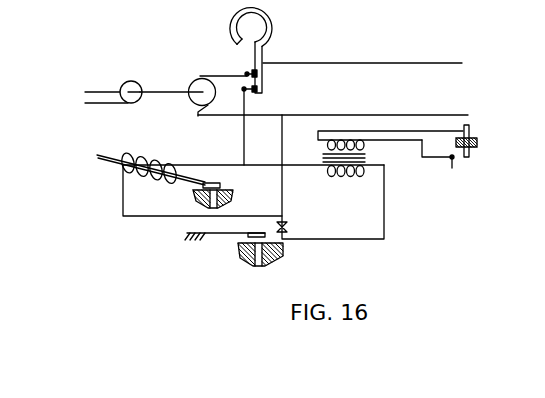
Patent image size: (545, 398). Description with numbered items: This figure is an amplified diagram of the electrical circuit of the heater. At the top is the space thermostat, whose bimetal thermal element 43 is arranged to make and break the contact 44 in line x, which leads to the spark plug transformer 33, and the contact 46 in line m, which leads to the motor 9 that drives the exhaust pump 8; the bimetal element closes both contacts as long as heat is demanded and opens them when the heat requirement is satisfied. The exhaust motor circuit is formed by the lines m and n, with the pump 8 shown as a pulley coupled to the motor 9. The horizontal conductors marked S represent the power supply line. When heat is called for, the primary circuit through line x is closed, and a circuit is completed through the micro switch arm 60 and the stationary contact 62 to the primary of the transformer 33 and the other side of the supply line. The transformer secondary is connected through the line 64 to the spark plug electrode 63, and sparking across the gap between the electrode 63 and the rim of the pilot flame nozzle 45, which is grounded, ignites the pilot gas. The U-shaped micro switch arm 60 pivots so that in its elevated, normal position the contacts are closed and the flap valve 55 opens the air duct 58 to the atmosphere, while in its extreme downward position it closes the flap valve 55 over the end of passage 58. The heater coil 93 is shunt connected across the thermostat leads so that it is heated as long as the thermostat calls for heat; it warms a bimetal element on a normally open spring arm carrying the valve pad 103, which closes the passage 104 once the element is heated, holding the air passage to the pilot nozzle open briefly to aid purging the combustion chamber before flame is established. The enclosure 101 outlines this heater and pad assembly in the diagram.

The exhaust pump 8 is at (138, 84).
The motor 9 is at (190, 84).
The thermal element 43 is at (277, 17).
The contact 46 is at (245, 73).
The contact 44 is at (243, 89).
The spark plug transformer 33 is at (367, 158).
The secondary circuit line 64 is at (327, 131).
The micro switch contact 62 is at (470, 133).
The spark plug electrode 63 is at (473, 147).
The pilot flame nozzle 45 is at (444, 166).
The heater coil 93 is at (156, 165).
The housing 101 is at (122, 186).
The valve pad 103 is at (221, 184).
The passage 104 is at (232, 202).
The micro switch arm 60 is at (276, 227).
The flap valve 55 is at (248, 235).
The passage 58 is at (262, 263).
The supply line S is at (402, 65).
The motor circuit line m is at (212, 75).
The motor circuit line n is at (225, 116).
The transformer circuit line x is at (246, 141).